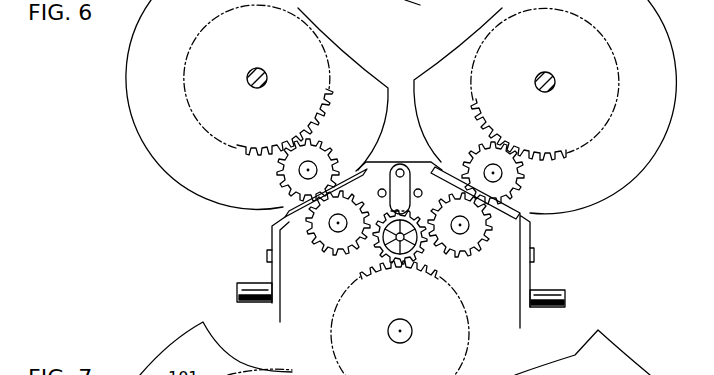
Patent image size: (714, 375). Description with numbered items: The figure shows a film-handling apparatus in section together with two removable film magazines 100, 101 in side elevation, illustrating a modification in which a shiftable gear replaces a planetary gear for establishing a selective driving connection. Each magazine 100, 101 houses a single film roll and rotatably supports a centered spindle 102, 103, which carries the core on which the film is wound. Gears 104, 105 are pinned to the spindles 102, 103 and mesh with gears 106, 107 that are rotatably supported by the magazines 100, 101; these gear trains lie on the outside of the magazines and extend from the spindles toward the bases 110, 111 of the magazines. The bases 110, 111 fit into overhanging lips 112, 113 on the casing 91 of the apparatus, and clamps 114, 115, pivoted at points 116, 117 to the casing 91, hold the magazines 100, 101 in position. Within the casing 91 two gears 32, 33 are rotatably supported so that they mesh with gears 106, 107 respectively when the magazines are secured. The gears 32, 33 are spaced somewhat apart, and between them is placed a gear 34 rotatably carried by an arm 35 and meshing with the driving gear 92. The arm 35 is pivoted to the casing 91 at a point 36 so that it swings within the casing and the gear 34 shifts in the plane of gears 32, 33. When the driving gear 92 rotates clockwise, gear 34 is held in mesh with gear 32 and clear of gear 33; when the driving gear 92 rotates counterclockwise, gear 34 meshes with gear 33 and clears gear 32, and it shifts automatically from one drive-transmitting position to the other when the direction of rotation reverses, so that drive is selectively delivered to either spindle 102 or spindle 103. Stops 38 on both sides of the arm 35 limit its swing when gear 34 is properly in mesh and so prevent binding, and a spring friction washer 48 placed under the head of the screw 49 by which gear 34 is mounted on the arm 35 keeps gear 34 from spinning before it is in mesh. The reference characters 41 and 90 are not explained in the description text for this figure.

The gear 32 is at (467, 254).
The gear 33 is at (334, 254).
The gear 34 is at (419, 249).
The arm 35 is at (399, 188).
The pivot point 36 is at (403, 169).
The stops 38 is at (383, 189).
The housing 41 is at (388, 8).
The spring friction washer 48 is at (383, 241).
The screw 49 is at (397, 249).
The shaft 90 is at (408, 342).
The casing 91 is at (278, 312).
The driving gear 92 is at (470, 315).
The removable film magazine 100 is at (637, 23).
The removable film magazine 101 is at (192, 18).
The spindle 102 is at (551, 89).
The spindle 103 is at (252, 85).
The gear 104 is at (561, 156).
The gear 105 is at (250, 152).
The gear 106 is at (523, 179).
The gear 107 is at (283, 176).
The base 110 is at (509, 239).
The base 111 is at (370, 192).
The overhanging lip 112 is at (433, 170).
The overhanging lip 113 is at (356, 171).
The clamp 114 is at (548, 271).
The clamp 115 is at (257, 269).
The pivot 116 is at (534, 258).
The pivot 117 is at (267, 256).